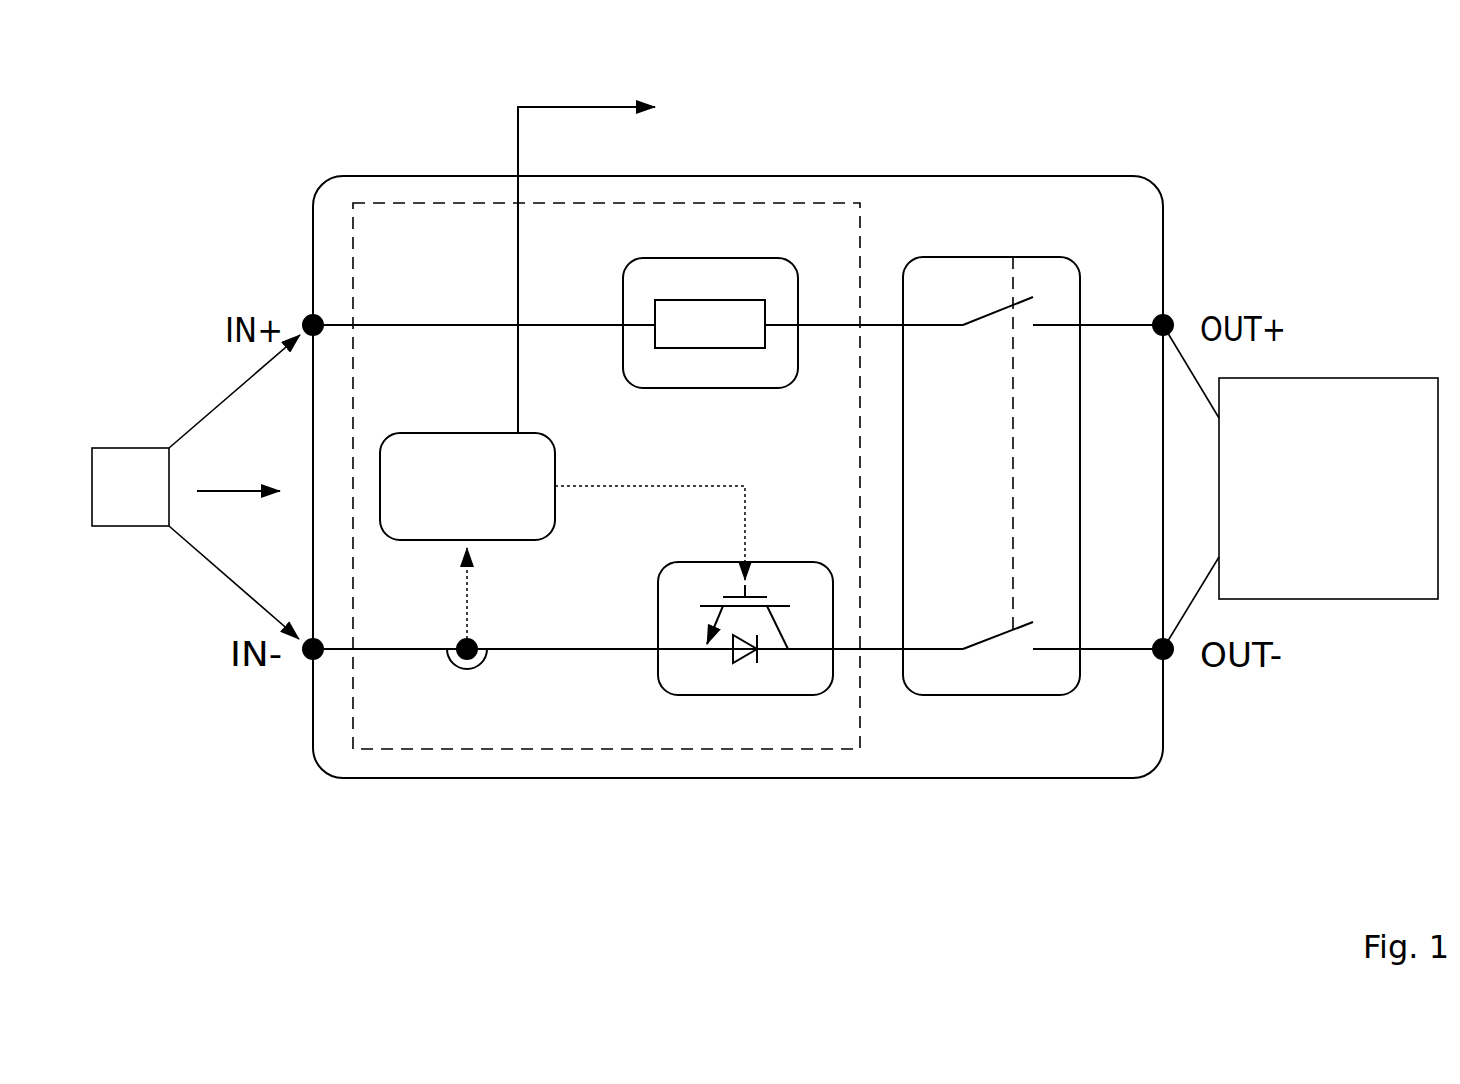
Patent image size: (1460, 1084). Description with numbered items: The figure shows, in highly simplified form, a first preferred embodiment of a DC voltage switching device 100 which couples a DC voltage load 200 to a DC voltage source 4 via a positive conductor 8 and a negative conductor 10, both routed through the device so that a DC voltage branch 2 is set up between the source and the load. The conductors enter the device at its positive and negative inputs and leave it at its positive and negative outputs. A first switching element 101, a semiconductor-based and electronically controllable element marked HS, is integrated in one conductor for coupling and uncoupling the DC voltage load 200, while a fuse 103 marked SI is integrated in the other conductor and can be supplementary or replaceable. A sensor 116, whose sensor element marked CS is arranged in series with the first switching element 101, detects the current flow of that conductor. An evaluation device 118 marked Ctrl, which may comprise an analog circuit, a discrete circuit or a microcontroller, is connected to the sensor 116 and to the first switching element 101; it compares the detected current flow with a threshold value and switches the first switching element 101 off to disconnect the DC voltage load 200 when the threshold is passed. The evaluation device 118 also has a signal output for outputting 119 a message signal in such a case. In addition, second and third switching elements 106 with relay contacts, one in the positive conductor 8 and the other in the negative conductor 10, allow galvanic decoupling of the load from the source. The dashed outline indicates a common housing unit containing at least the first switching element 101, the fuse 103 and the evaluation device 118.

The DC voltage switching device 100 is at (355, 187).
The positive conductor 8 is at (385, 318).
The negative conductor 10 is at (380, 658).
The DC voltage source 4 is at (196, 487).
The DC voltage branch 2 is at (238, 470).
The DC voltage load 200 is at (1300, 487).
The evaluation device 118 is at (463, 428).
The outputting of a message signal 119 is at (586, 247).
The fuse 103 is at (750, 252).
The second and third switching elements 106 is at (954, 583).
The first switching element 101 is at (766, 706).
The sensor 116 is at (472, 736).